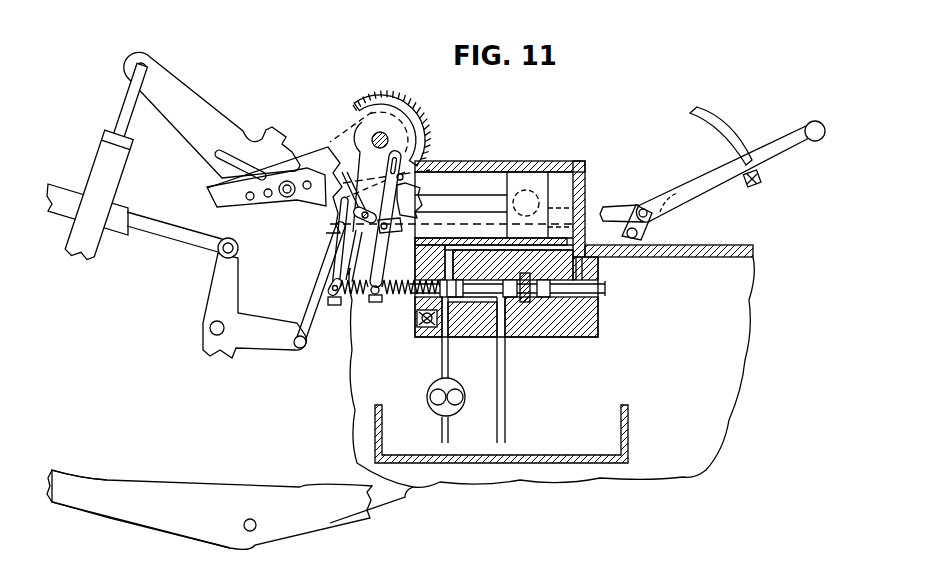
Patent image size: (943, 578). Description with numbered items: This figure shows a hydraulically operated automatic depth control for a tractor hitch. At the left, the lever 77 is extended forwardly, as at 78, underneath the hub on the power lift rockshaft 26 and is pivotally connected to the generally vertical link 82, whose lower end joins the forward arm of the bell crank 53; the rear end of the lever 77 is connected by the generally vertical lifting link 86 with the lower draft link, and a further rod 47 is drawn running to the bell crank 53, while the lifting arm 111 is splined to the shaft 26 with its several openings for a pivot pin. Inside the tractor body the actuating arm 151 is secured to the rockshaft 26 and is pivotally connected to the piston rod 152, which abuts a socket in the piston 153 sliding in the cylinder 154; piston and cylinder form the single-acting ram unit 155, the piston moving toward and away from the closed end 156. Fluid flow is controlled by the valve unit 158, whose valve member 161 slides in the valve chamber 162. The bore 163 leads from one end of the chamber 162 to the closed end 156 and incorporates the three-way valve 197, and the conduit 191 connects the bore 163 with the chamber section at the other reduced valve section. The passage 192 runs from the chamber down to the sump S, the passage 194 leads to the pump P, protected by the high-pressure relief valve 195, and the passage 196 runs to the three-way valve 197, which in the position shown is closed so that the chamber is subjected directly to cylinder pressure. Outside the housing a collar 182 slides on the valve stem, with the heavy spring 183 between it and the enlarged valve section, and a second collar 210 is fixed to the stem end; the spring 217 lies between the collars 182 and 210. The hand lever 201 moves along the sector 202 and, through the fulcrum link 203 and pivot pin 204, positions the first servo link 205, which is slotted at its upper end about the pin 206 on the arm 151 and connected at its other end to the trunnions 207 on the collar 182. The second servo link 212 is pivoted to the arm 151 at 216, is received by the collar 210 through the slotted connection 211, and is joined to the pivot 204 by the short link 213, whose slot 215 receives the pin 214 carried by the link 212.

The lever 77 is at (211, 119).
The lifting link 86 is at (93, 166).
The lifting arm 111 is at (210, 188).
The rod 47 is at (147, 236).
The bell crank 53 is at (207, 293).
The link 82 is at (306, 297).
The slot 215 is at (328, 146).
The forward extension of lever 78 is at (327, 203).
The power lift rockshaft 26 is at (372, 134).
The actuating arm 151 is at (386, 122).
The pivot pin 206 is at (400, 152).
The pivot 216 is at (403, 174).
The first servo link 205 is at (412, 183).
The piston rod 152 is at (478, 200).
The ram unit 155 is at (512, 160).
The cylinder 154 is at (535, 162).
The piston 153 is at (540, 177).
The closed end of cylinder 156 is at (581, 187).
The bore or conduit 163 is at (592, 230).
The bore or conduit 191 is at (466, 248).
The three-way valve 197 is at (586, 272).
The valve member 161 is at (607, 292).
The valve unit 158 is at (598, 326).
The valve chamber 162 is at (555, 290).
The fifth bore or passage 196 is at (586, 303).
The fourth conduit or passage 194 is at (463, 305).
The high-pressure relief valve 195 is at (417, 324).
The third passage or bore 192 is at (503, 383).
The spring 183 is at (375, 299).
The collar 182 is at (377, 305).
The spring 217 is at (352, 290).
The trunnions 207 is at (338, 303).
The slotted connection 211 is at (314, 285).
The second collar 210 is at (330, 290).
The pivot pin 204 is at (348, 273).
The second servo link 212 is at (337, 257).
The short link 213 is at (343, 240).
The pin 214 is at (332, 233).
The sector 202 is at (718, 125).
The hand lever 201 is at (773, 147).
The fulcrum link 203 is at (650, 218).
The pump P is at (455, 388).
The sump S is at (594, 414).